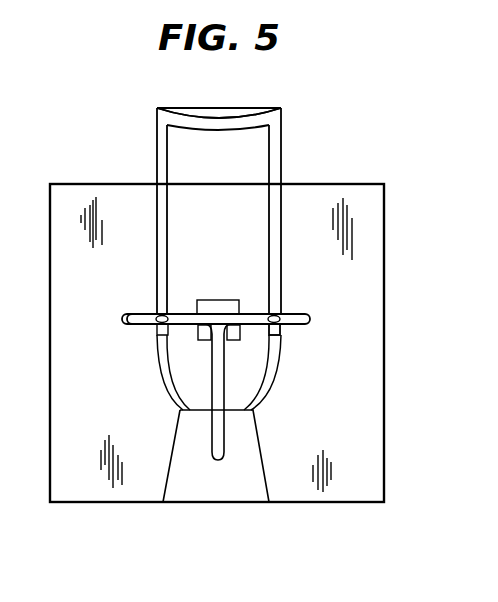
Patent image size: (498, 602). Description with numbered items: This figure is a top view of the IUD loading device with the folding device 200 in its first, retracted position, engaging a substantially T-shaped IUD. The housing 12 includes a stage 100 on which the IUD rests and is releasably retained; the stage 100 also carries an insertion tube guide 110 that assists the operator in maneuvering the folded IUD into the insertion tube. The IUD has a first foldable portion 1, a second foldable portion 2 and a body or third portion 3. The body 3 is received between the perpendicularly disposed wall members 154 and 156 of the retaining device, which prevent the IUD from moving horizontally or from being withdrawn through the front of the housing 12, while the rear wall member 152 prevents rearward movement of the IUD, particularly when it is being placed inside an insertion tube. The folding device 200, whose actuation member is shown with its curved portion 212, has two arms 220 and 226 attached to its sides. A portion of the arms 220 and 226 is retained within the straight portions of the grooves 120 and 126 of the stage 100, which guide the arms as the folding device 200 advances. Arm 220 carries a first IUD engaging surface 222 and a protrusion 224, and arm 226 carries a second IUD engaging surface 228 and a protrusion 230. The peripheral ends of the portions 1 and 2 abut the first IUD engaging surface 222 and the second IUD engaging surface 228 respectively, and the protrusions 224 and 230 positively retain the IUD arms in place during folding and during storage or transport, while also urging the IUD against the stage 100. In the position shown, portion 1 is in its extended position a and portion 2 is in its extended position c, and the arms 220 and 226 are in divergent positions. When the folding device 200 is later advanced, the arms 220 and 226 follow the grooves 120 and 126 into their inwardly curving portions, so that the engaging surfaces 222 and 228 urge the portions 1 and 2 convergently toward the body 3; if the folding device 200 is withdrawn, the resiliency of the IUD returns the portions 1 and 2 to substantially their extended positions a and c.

The stage 100 is at (82, 495).
The insertion tube guide 110 is at (214, 500).
The housing 12 is at (312, 502).
The folding device 200 is at (200, 108).
The curved top portion of holder 212 is at (216, 120).
The arm 220 is at (158, 160).
The arm 226 is at (281, 158).
The first foldable portion 1 is at (135, 326).
The protrusion 224 is at (127, 320).
The extended position a is at (120, 308).
The extended position c is at (312, 320).
The second foldable portion 2 is at (260, 314).
The first IUD engaging surface 222 is at (160, 314).
The second IUD engaging surface 228 is at (280, 308).
The protrusion 230 is at (283, 328).
The rear wall member 152 is at (218, 300).
The wall member 156 is at (203, 341).
The wall member 154 is at (234, 341).
The body 3 is at (218, 430).
The guide member 120 is at (165, 367).
The second groove 126 is at (262, 377).